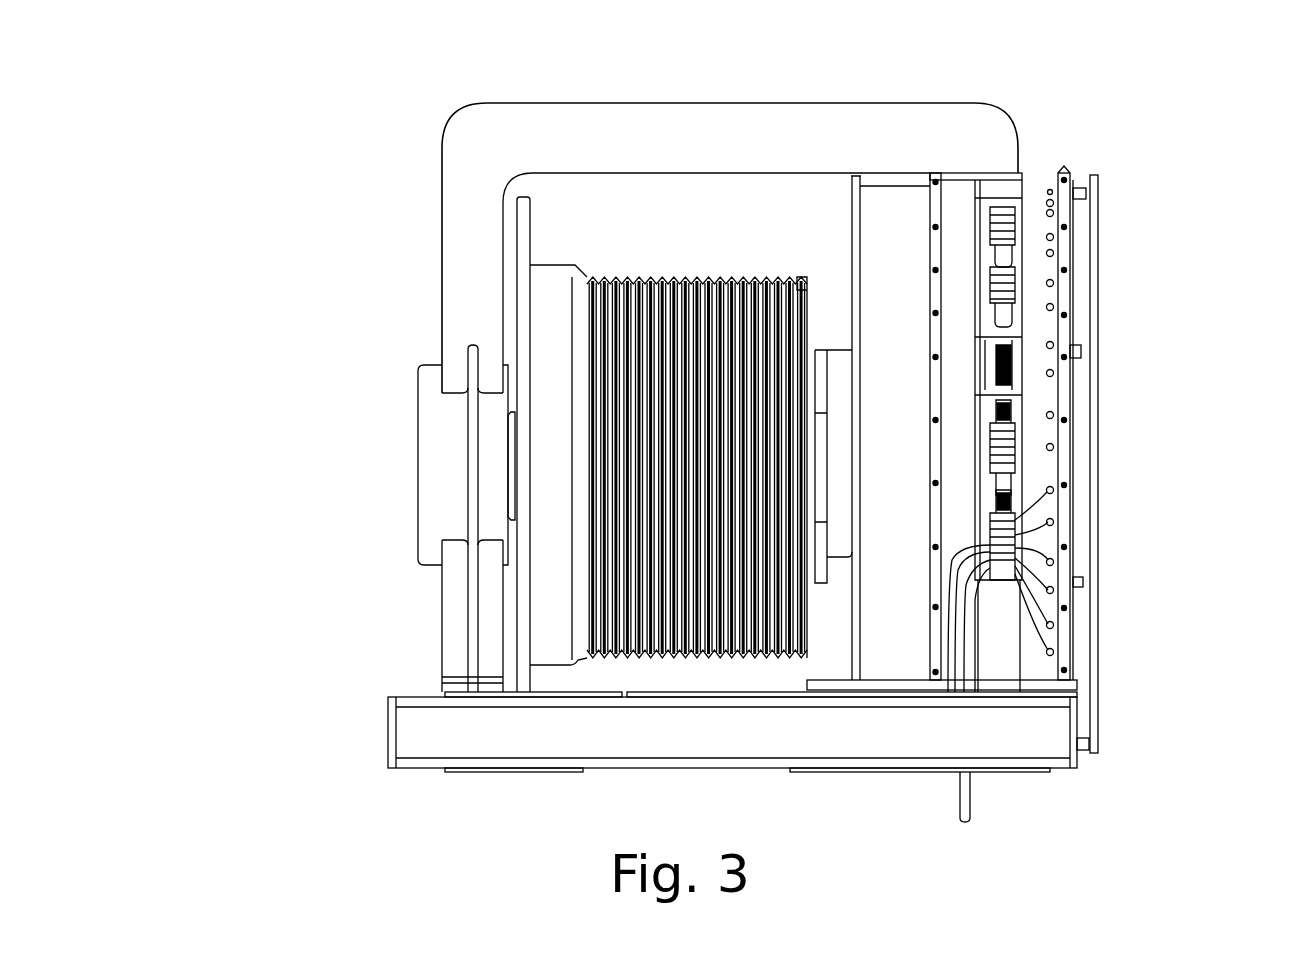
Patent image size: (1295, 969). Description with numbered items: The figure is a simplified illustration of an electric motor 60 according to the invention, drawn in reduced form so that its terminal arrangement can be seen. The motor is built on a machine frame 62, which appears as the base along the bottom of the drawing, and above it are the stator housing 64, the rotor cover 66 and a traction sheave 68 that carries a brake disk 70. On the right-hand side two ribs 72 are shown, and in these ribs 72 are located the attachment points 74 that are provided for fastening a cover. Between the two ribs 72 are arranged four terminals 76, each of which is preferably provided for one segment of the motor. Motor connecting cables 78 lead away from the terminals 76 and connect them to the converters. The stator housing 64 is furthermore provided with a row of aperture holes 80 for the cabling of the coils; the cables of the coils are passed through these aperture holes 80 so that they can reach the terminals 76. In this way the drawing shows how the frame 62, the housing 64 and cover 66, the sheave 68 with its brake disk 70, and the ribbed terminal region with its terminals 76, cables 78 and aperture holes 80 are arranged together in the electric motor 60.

The electric motor 60 is at (303, 178).
The machine frame 62 is at (468, 740).
The stator housing 64 is at (897, 217).
The rotor cover 66 is at (1097, 440).
The traction sheave 68 is at (700, 277).
The brake disk 70 is at (530, 197).
The ribs 72 is at (935, 177).
The attachment points 74 is at (937, 225).
The terminals 76 is at (1015, 221).
The motor connecting cables 78 is at (967, 655).
The aperture holes 80 is at (1052, 307).